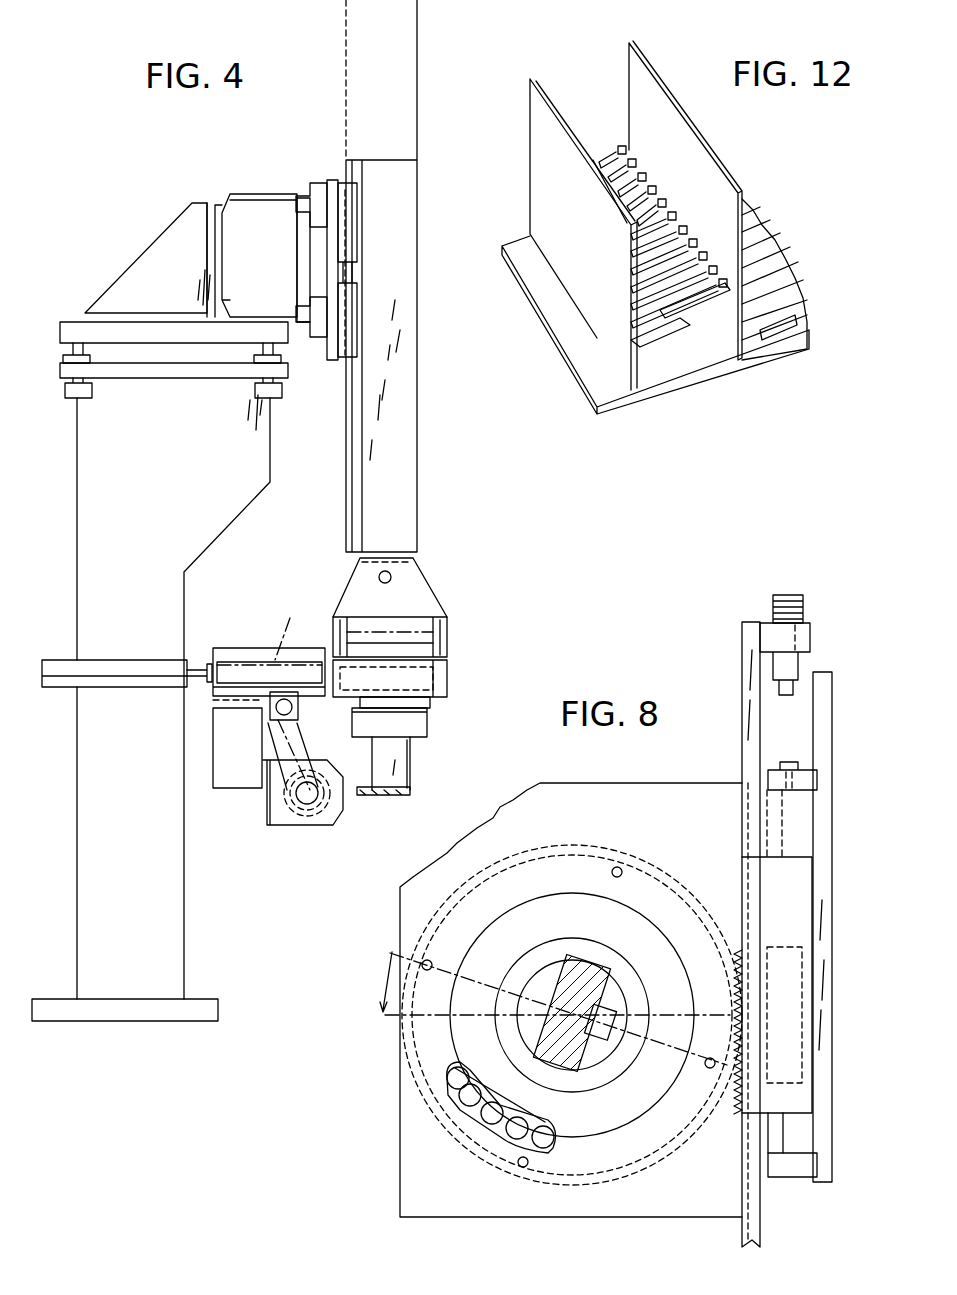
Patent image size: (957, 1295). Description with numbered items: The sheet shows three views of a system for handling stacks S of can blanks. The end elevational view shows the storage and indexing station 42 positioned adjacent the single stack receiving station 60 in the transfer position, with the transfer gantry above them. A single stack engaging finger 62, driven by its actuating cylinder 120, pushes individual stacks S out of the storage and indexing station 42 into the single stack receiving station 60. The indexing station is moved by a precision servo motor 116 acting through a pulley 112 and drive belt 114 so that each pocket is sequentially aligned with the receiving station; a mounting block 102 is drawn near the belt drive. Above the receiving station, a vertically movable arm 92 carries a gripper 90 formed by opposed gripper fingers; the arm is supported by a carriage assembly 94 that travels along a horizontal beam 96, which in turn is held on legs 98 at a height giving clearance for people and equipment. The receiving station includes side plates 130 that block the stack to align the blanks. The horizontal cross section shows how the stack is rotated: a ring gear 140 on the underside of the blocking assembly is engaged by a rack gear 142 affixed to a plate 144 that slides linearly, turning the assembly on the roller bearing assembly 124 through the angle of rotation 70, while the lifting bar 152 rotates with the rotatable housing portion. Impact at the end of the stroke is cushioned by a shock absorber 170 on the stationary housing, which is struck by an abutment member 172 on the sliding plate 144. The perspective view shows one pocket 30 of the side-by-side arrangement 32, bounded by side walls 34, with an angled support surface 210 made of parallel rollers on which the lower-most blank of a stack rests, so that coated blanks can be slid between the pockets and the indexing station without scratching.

In FIG. 4, the vertically movable arm 92 is at (417, 208).
In FIG. 4, the beam 96 is at (250, 207).
In FIG. 4, the carriage assembly 94 is at (320, 183).
In FIG. 4, the legs 98 is at (243, 507).
In FIG. 4, the actuating cylinder 120 is at (100, 660).
In FIG. 4, the single stack engaging finger 62 is at (207, 664).
In FIG. 4, the storage and indexing station 42 is at (258, 648).
In FIG. 4, the stack S is at (289, 626).
In FIG. 4, the mounting block 102 is at (217, 702).
In FIG. 4, the belt 114 is at (305, 752).
In FIG. 4, the precision servo motor 116 is at (280, 827).
In FIG. 4, the gripper 90 is at (430, 590).
In FIG. 4, the side plates 130 is at (447, 680).
In FIG. 4, the single stack receiving station 60 is at (427, 723).
In FIG. 12, the side-by-side arrangement 32 is at (687, 390).
In FIG. 12, the side wall 34 is at (541, 118).
In FIG. 12, the pocket 30 is at (618, 148).
In FIG. 12, the pulley 112 is at (770, 270).
In FIG. 12, the angled support surface 210 is at (781, 319).
In FIG. 8, the ring gear 140 is at (680, 880).
In FIG. 8, the lifting bar 152 is at (592, 960).
In FIG. 8, the angle of rotation 70 is at (388, 980).
In FIG. 8, the roller bearing assembly 124 is at (468, 1127).
In FIG. 8, the rack gear 142 is at (803, 882).
In FIG. 8, the plate 144 is at (830, 700).
In FIG. 8, the shock absorber 170 is at (805, 613).
In FIG. 8, the abutment member 172 is at (760, 758).